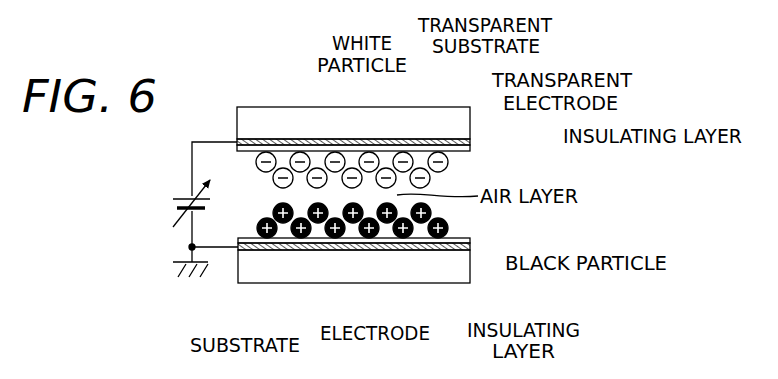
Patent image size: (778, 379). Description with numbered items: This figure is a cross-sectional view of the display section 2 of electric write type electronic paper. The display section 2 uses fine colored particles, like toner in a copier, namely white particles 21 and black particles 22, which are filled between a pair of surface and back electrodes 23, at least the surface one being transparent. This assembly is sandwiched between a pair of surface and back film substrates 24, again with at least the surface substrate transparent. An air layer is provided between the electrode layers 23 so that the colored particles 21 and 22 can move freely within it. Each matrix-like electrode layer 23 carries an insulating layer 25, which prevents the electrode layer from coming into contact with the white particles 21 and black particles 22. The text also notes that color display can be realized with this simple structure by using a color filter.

The display section 2 is at (237, 97).
The white particles 21 is at (398, 153).
The black particles 22 is at (430, 208).
The electrodes 23 is at (455, 146).
The film substrates 24 is at (433, 107).
The insulating layer 25 is at (456, 148).